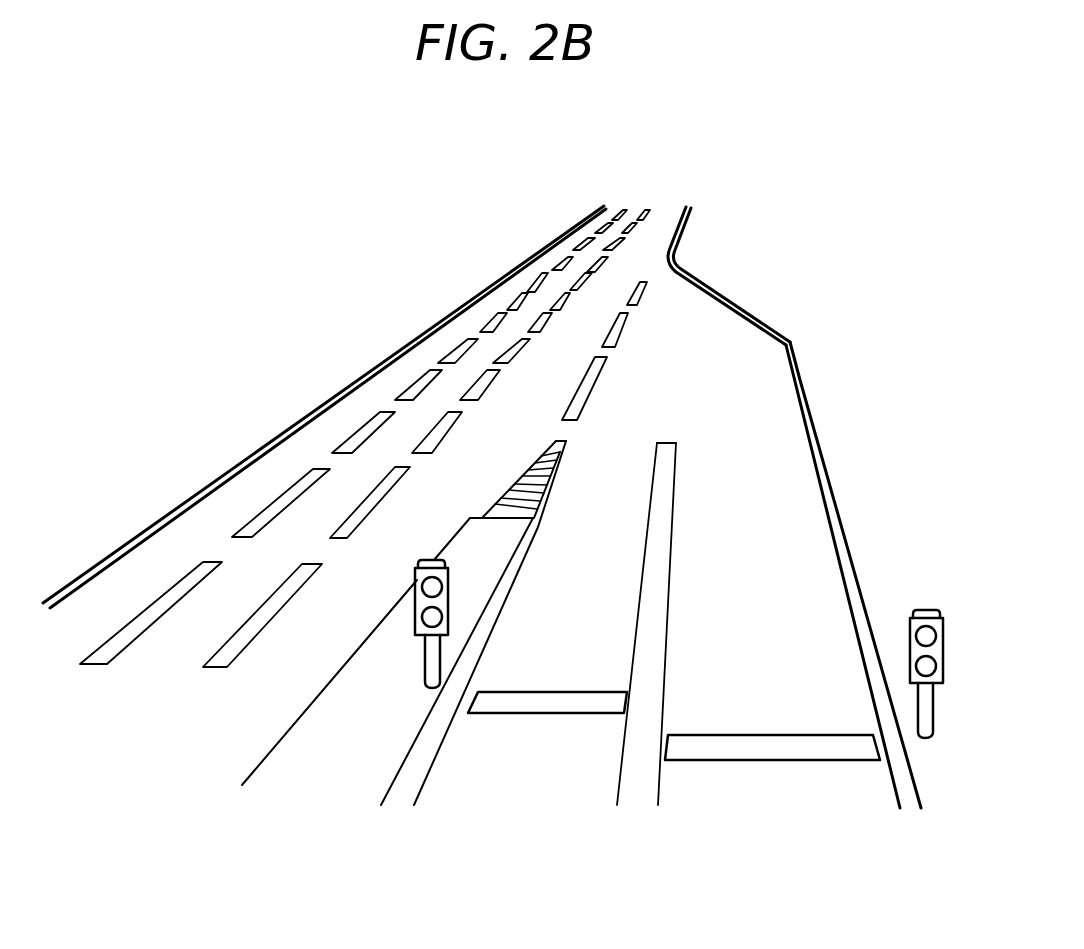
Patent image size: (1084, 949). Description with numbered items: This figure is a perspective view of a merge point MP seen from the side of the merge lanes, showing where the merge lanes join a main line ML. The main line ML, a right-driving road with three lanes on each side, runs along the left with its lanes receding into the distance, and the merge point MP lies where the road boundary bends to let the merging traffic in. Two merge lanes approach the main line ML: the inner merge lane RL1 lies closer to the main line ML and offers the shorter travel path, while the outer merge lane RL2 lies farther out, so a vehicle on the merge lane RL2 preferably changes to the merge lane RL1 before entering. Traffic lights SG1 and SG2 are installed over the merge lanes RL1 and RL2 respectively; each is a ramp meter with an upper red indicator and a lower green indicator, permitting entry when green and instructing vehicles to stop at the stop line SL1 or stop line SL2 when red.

The main line ML is at (317, 454).
The merge point MP is at (676, 272).
The merge lane RL1 is at (602, 478).
The merge lane RL2 is at (797, 488).
The traffic light SG1 is at (433, 562).
The traffic light SG2 is at (925, 608).
The stop line SL1 is at (555, 702).
The stop line SL2 is at (775, 747).